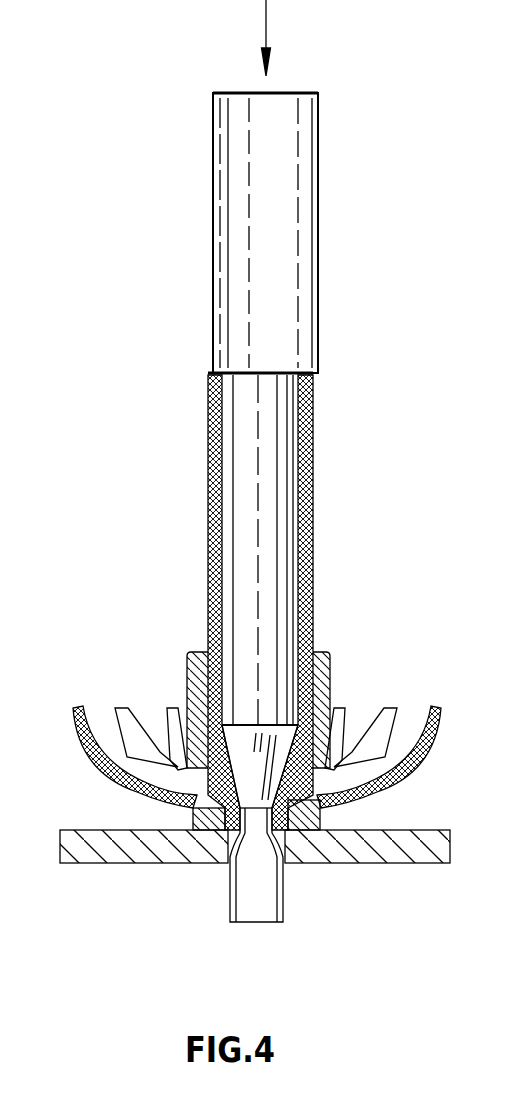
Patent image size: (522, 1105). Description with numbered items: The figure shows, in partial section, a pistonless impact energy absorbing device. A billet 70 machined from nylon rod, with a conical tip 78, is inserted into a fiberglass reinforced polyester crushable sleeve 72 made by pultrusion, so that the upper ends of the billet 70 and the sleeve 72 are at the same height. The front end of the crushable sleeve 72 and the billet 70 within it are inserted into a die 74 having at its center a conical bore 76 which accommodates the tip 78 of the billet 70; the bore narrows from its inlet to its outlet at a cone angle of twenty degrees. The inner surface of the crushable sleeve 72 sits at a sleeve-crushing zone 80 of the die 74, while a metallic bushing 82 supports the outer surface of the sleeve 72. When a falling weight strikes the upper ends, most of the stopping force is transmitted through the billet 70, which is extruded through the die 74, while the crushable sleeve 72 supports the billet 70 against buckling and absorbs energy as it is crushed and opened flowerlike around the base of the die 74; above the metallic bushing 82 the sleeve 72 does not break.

The billet 70 is at (280, 448).
The crushable sleeve 72 is at (313, 517).
The die 74 is at (310, 800).
The conical bore 76 is at (216, 835).
The tip 78 is at (237, 745).
The sleeve-crushing zone 80 is at (302, 830).
The metallic bushing 82 is at (323, 690).